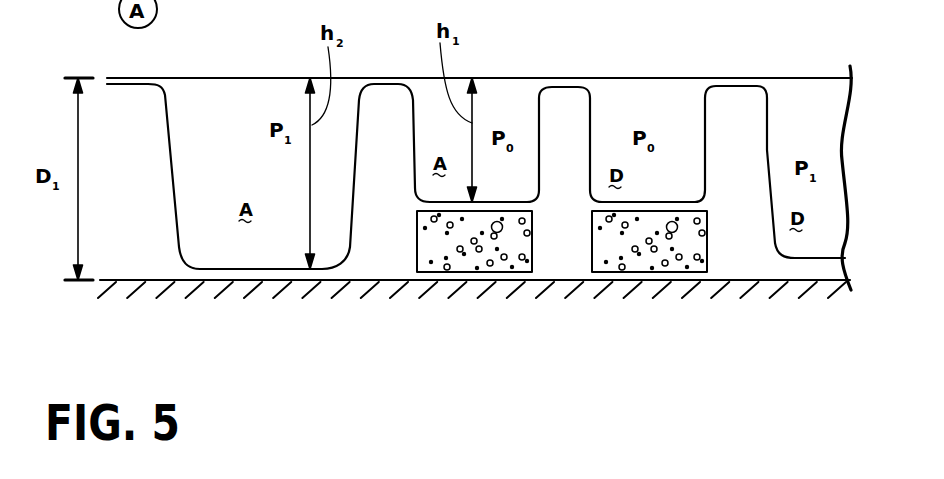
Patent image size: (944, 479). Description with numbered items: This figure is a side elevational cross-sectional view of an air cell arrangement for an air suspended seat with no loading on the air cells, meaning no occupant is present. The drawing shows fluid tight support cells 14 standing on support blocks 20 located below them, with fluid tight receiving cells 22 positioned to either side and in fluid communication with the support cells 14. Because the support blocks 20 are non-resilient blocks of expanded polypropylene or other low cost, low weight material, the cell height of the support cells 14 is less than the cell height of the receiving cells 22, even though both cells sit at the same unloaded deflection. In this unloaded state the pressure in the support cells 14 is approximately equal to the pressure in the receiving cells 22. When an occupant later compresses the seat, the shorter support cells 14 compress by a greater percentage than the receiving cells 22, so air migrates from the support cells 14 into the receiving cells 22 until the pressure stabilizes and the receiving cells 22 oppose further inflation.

The fluid tight support cell 14 is at (517, 107).
The support block 20 is at (465, 262).
The fluid tight receiving cell 22 is at (233, 110).